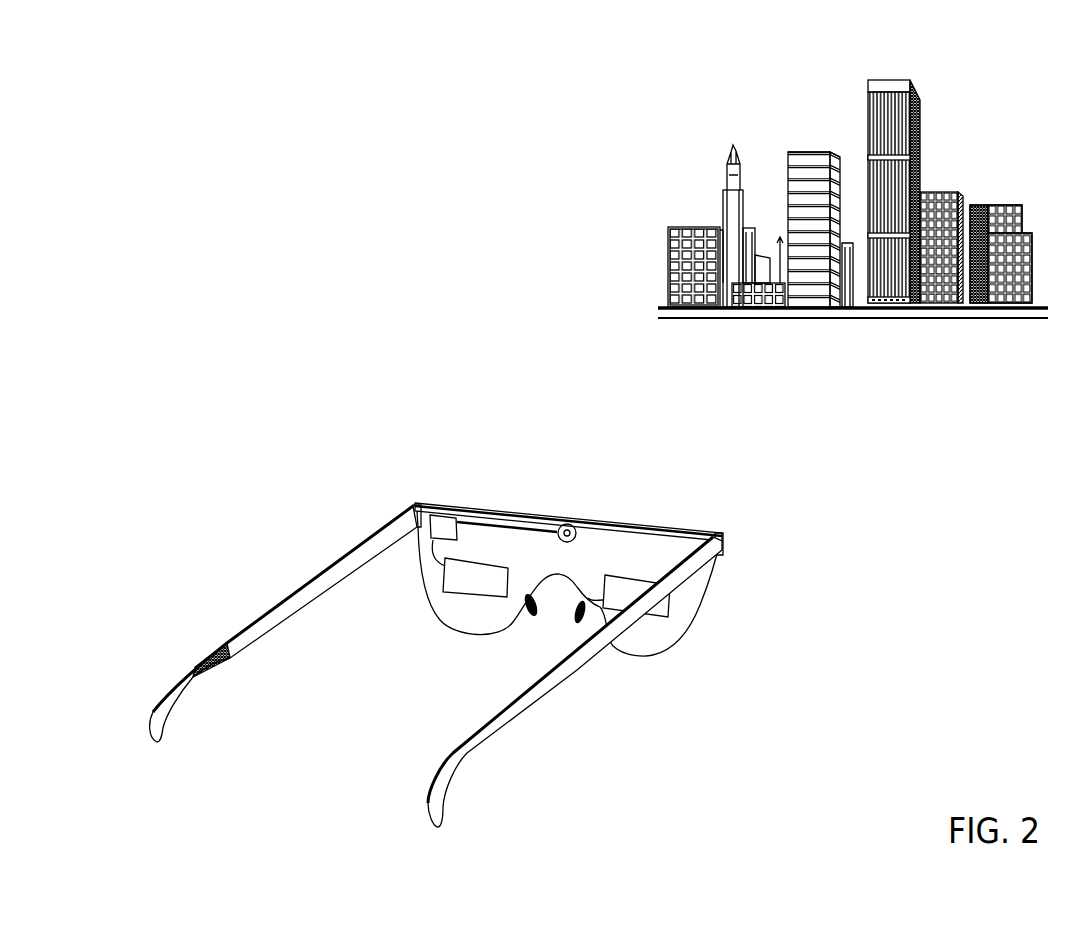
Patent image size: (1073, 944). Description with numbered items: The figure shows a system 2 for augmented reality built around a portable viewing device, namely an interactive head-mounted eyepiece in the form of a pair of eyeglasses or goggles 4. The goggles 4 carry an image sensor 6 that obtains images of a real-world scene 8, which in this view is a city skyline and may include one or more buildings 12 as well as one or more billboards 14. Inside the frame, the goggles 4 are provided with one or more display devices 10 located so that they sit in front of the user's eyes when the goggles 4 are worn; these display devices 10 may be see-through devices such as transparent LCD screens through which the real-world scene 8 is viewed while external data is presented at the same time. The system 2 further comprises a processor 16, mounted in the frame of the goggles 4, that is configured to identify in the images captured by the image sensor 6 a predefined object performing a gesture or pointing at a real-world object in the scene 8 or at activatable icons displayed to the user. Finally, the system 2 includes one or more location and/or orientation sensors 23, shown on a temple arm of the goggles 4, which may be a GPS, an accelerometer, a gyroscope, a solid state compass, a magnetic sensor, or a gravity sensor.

The system for augmented reality 2 is at (776, 656).
The goggles 4 is at (335, 557).
The image sensor 6 is at (570, 524).
The real-world scene 8 is at (853, 260).
The display devices 10 is at (462, 580).
The buildings 12 is at (920, 158).
The billboards 14 is at (808, 150).
The processor 16 is at (445, 509).
The location and/or orientation sensors 23 is at (216, 642).